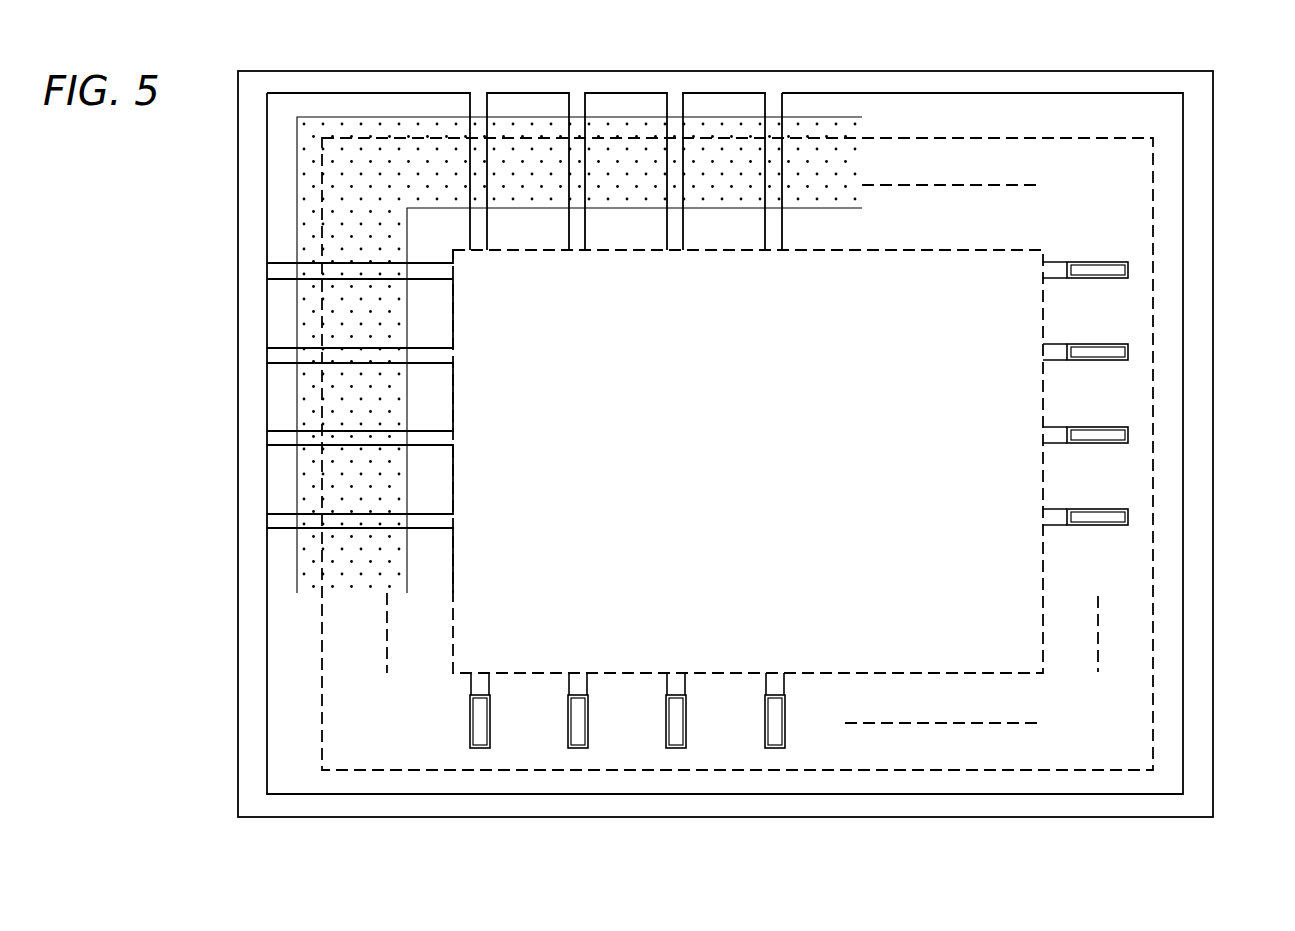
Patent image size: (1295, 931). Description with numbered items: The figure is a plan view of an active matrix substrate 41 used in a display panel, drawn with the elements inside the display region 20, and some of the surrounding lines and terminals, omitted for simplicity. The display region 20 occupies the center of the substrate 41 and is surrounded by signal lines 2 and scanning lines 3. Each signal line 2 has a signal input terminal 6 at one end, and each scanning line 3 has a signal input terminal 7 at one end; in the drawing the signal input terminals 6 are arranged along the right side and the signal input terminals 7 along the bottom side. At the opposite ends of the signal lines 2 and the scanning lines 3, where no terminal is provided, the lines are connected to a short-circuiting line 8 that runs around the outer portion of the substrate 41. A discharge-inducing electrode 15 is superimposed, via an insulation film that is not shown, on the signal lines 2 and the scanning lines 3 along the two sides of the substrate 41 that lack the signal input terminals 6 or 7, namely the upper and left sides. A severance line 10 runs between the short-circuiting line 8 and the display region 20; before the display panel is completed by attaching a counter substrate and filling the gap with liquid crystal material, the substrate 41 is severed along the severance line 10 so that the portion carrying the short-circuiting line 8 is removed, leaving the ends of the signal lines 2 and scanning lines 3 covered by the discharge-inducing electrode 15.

The signal line 2 is at (428, 263).
The scanning line 3 is at (782, 232).
The signal input terminal 6 is at (1100, 262).
The signal input terminal 7 is at (765, 720).
The short-circuiting line 8 is at (1206, 125).
The severance line 10 is at (1156, 698).
The discharge-inducing electrode 15 is at (817, 127).
The display region 20 is at (1047, 555).
The active matrix substrate 41 is at (200, 610).